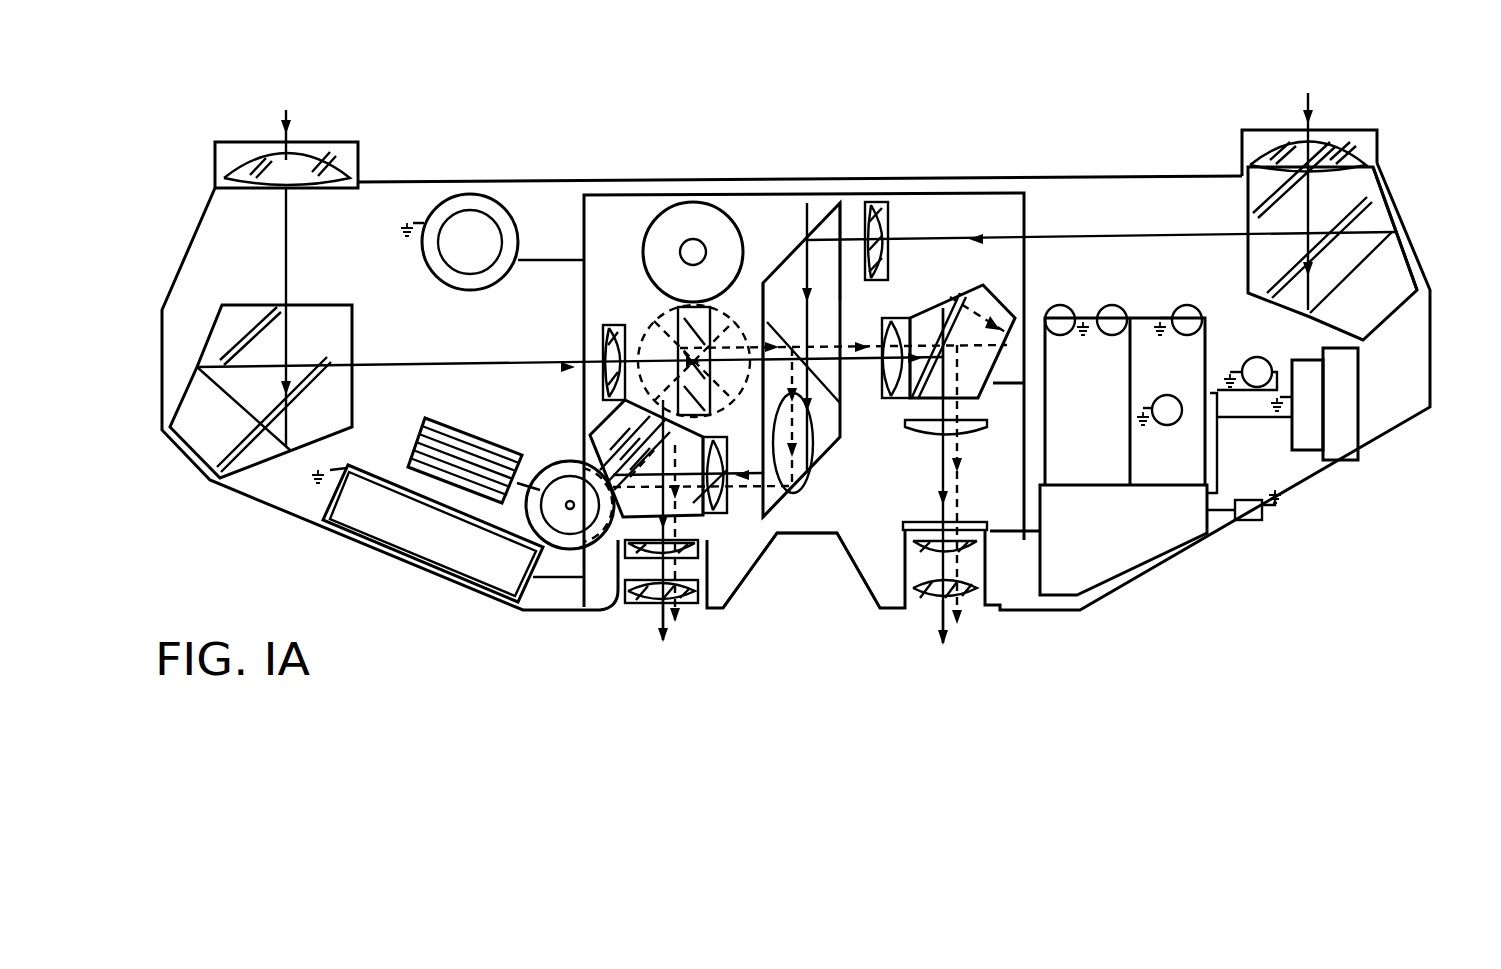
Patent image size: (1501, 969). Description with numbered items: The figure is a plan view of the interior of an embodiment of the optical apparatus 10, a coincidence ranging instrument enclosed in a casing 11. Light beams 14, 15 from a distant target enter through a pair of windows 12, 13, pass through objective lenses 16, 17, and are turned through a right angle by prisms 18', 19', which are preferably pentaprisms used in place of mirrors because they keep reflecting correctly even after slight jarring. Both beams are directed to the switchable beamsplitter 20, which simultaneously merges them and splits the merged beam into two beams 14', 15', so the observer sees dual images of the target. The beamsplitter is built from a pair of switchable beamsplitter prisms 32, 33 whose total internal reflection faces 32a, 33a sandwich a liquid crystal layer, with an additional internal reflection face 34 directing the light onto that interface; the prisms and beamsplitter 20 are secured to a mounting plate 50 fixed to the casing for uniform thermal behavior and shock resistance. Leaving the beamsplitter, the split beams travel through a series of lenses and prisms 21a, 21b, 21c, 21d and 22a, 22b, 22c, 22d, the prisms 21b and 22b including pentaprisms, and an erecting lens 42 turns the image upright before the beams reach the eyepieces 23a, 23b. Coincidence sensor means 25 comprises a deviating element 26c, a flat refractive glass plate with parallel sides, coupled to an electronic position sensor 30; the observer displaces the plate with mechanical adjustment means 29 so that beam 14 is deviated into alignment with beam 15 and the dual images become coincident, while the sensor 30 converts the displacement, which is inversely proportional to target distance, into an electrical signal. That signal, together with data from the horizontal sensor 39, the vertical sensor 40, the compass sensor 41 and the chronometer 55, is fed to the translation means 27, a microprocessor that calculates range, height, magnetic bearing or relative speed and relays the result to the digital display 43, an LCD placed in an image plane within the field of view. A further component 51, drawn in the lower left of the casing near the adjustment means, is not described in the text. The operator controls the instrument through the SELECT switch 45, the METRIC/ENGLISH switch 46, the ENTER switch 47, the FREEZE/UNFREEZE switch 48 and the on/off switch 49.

The optical apparatus 10 is at (907, 172).
The casing 11 is at (1432, 380).
The window 12 is at (235, 142).
The window 13 is at (1357, 128).
The light beam 14 is at (323, 278).
The split light beam 14' is at (627, 640).
The light beam 15 is at (1255, 201).
The split light beam 15' is at (572, 480).
The objective lens 16 is at (220, 166).
The objective lens 17 is at (1357, 145).
The prism 18' is at (261, 391).
The prism 19' is at (1332, 241).
The switchable beamsplitter 20 is at (850, 316).
The lens 21a is at (907, 400).
The pentaprism 21b is at (802, 484).
The lens 21c is at (972, 543).
The lens 21d is at (990, 572).
The lens 22a is at (727, 497).
The pentaprism 22b is at (605, 610).
The lens 22c is at (707, 583).
The lens 22d is at (695, 582).
The eyepiece 23a is at (967, 597).
The eyepiece 23b is at (687, 572).
The coincidence sensor means 25 is at (645, 325).
The deviating element 26c is at (762, 283).
The translation means 27 is at (1166, 456).
The mechanical adjustment means 29 is at (512, 440).
The electronic position sensor 30 is at (812, 400).
The switchable beamsplitter prism 32 is at (890, 218).
The total internal reflection face 32a is at (672, 320).
The switchable beamsplitter prism 33 is at (815, 440).
The total internal reflection face 33a is at (803, 483).
The internal reflection face 34 is at (772, 262).
The horizontal sensor 39 is at (692, 217).
The vertical sensor 40 is at (1330, 407).
The compass sensor 41 is at (460, 242).
The erecting lens 42 is at (897, 312).
The digital display 43 is at (801, 570).
The SELECT switch 45 is at (1187, 305).
The METRIC/ENGLISH switch 46 is at (1112, 305).
The ENTER switch 47 is at (1257, 387).
The FREEZE/UNFREEZE switch 48 is at (1173, 423).
The on/off switch 49 is at (1060, 305).
The mounting plate 50 is at (797, 240).
The battery 51 is at (427, 533).
The chronometer 55 is at (1263, 527).